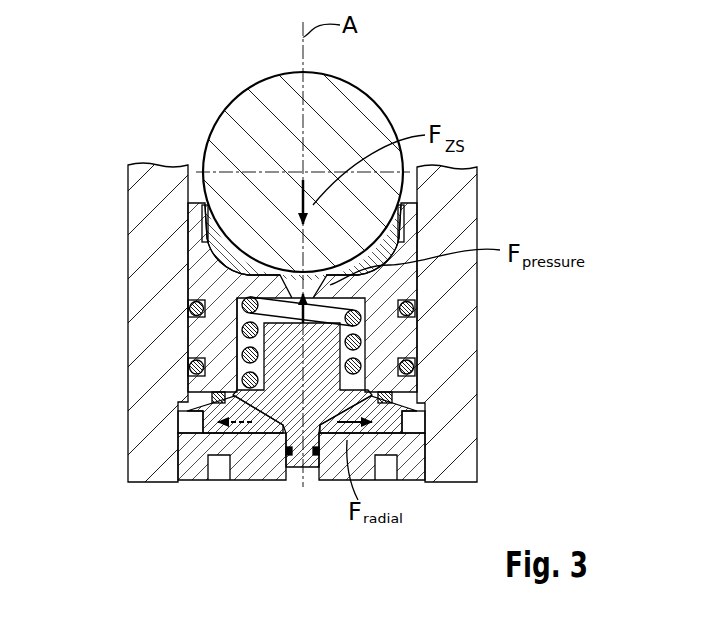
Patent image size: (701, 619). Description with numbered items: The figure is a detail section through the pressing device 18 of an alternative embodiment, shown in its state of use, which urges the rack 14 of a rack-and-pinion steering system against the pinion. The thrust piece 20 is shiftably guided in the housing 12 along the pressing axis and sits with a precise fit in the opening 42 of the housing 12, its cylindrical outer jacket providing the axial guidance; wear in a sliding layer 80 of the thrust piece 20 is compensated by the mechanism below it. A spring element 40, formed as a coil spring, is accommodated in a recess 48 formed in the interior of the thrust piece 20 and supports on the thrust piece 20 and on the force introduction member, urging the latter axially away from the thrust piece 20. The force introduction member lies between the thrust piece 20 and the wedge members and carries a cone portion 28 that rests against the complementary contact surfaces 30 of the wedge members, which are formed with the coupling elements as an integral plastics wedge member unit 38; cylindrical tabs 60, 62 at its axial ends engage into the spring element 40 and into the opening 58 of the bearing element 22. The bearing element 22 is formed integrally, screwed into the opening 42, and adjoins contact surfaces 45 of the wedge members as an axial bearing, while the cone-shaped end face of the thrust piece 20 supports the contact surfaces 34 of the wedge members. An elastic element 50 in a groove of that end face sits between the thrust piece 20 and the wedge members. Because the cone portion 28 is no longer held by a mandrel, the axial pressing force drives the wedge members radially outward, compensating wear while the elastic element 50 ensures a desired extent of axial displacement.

The housing 12 is at (467, 192).
The rack 14 is at (372, 110).
The pressing device 18 is at (470, 99).
The thrust piece 20 is at (207, 265).
The bearing element 22 is at (413, 460).
The cone portion 28 is at (385, 392).
The contact surfaces 30 is at (257, 412).
The contact surfaces 34 is at (190, 402).
The wedge member unit 38 is at (388, 422).
The spring element 40 is at (245, 350).
The opening 42 is at (210, 502).
The contact surfaces 45 is at (217, 447).
The recess 48 is at (415, 310).
The elastic element 50 is at (215, 392).
The opening 58 is at (313, 490).
The axial tab 60 is at (295, 465).
The cylindrical tab 62 is at (237, 333).
The sliding layer 80 is at (203, 235).